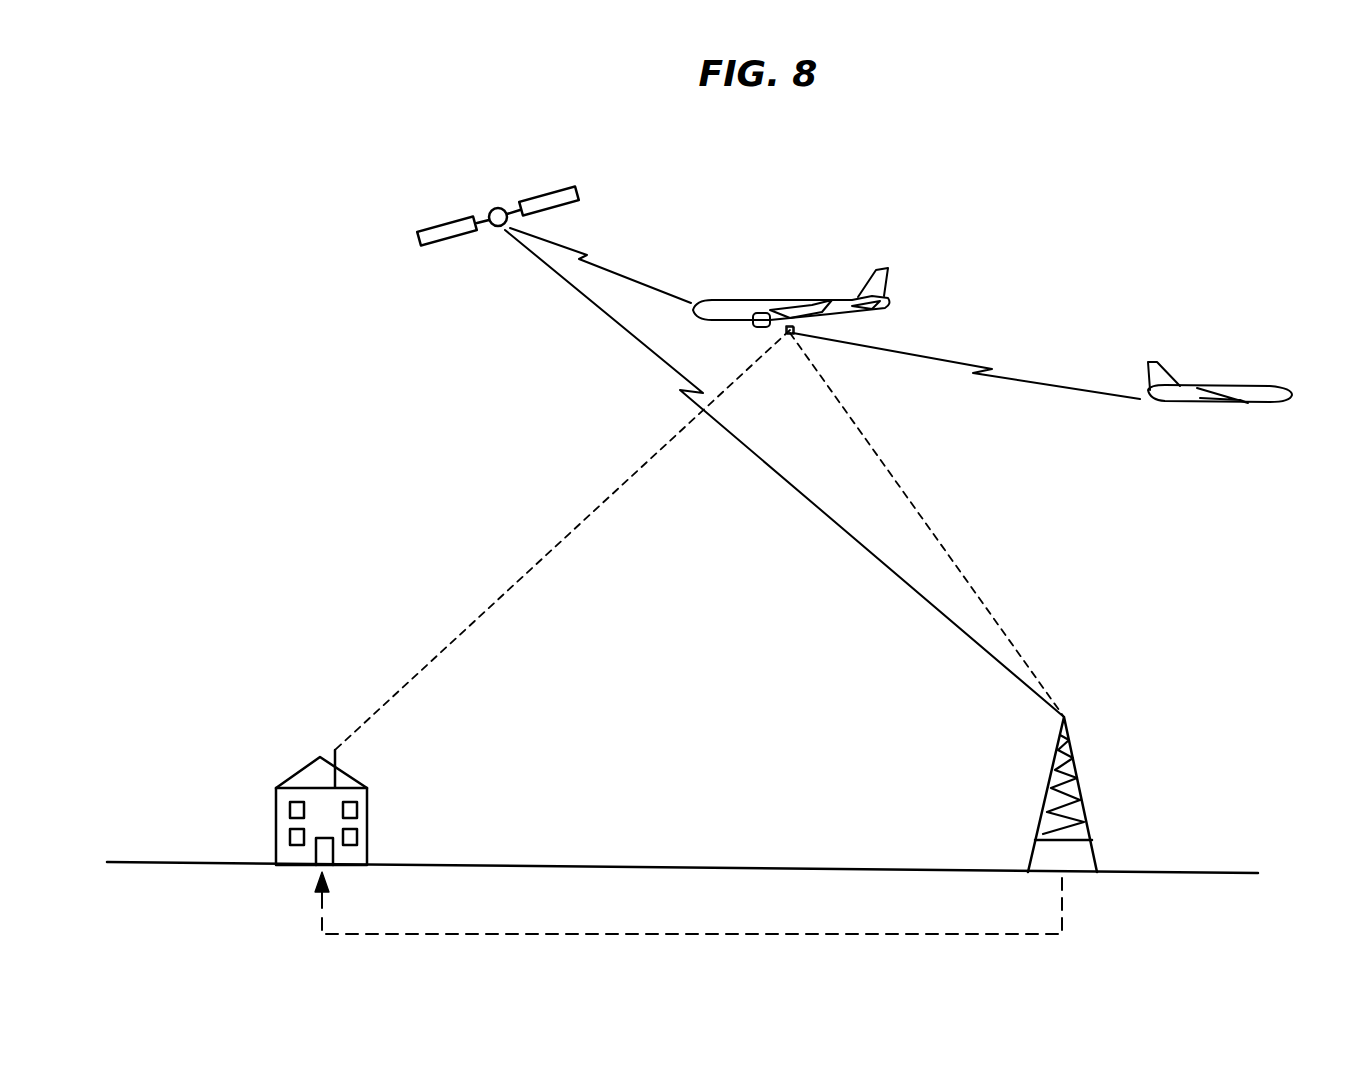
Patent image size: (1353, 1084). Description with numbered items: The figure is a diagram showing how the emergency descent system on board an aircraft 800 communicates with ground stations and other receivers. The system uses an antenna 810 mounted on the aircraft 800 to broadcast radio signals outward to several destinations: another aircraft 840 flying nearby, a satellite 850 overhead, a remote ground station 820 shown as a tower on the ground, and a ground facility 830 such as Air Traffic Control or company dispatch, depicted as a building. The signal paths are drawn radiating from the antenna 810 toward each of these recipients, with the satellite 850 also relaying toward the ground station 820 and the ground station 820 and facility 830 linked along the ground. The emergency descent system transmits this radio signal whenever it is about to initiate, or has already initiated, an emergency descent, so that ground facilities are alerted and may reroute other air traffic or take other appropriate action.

The aircraft 800 is at (737, 298).
The antenna 810 is at (797, 329).
The remote ground station 820 is at (1052, 758).
The ground facility 830 is at (301, 772).
The other aircraft 840 is at (1272, 383).
The satellite 850 is at (498, 207).